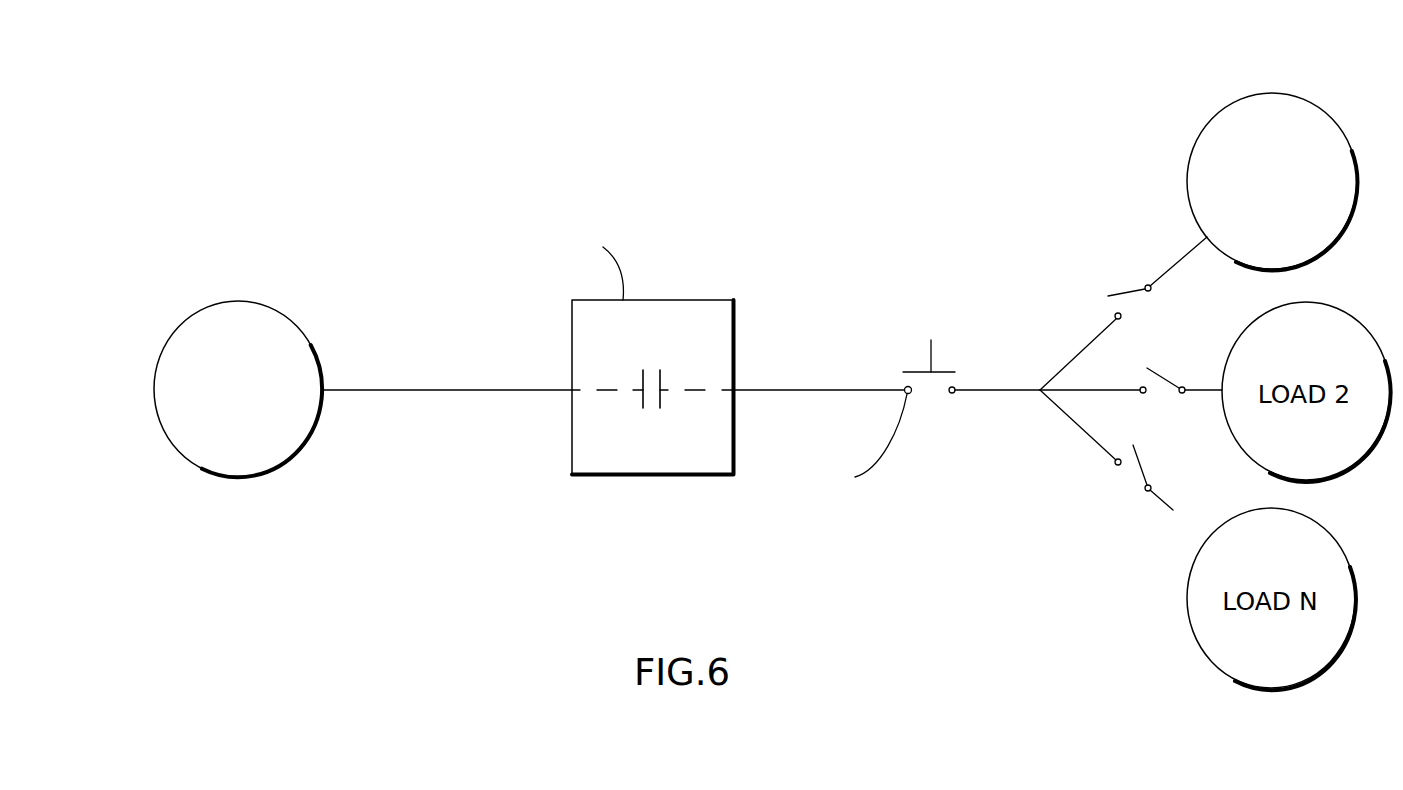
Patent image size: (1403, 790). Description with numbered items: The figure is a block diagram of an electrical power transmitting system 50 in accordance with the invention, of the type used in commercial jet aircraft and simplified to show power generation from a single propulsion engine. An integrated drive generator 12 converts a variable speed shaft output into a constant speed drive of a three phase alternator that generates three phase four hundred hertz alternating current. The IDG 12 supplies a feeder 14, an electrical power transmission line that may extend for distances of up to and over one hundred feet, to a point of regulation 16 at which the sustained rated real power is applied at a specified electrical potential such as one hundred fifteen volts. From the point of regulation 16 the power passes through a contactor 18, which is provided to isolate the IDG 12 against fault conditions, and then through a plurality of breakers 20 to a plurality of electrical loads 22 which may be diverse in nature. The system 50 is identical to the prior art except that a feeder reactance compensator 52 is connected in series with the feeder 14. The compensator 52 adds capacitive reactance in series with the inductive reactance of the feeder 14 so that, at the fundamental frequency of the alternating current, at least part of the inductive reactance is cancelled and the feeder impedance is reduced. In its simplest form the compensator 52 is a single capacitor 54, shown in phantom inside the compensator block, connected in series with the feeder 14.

The integrated drive generator 12 is at (265, 301).
The feeder 14 is at (430, 390).
The point of regulation 16 is at (898, 377).
The contactor 18 is at (933, 352).
The breakers 20 is at (1130, 292).
The electrical loads 22 is at (1338, 128).
The electrical power transmitting system 50 is at (858, 141).
The feeder reactance compensator 52 is at (604, 372).
The capacitor 54 is at (662, 377).